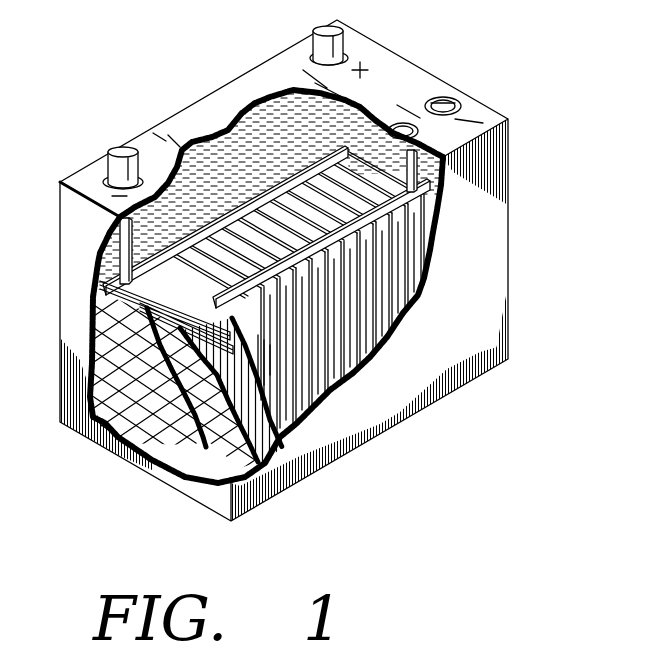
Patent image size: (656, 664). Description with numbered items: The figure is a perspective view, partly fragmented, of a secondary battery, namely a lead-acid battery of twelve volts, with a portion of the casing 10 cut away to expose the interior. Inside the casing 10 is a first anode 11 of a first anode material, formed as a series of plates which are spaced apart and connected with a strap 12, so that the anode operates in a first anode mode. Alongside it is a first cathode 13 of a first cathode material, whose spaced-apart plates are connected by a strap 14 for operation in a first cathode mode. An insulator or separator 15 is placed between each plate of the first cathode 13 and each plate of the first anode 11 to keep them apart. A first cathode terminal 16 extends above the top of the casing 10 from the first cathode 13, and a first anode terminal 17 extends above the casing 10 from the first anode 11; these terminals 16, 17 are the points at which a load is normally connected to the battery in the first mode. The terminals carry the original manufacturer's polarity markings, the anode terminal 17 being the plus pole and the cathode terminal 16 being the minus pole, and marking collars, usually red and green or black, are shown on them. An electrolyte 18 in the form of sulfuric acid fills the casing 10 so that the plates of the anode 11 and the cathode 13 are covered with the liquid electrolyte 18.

The casing 10 is at (508, 207).
The first anode 11 is at (302, 378).
The strap 12 is at (428, 220).
The first cathode 13 is at (143, 413).
The strap 14 is at (318, 146).
The separator 15 is at (217, 443).
The first cathode terminal 16 is at (120, 148).
The first anode terminal 17 is at (322, 26).
The electrolyte 18 is at (240, 173).